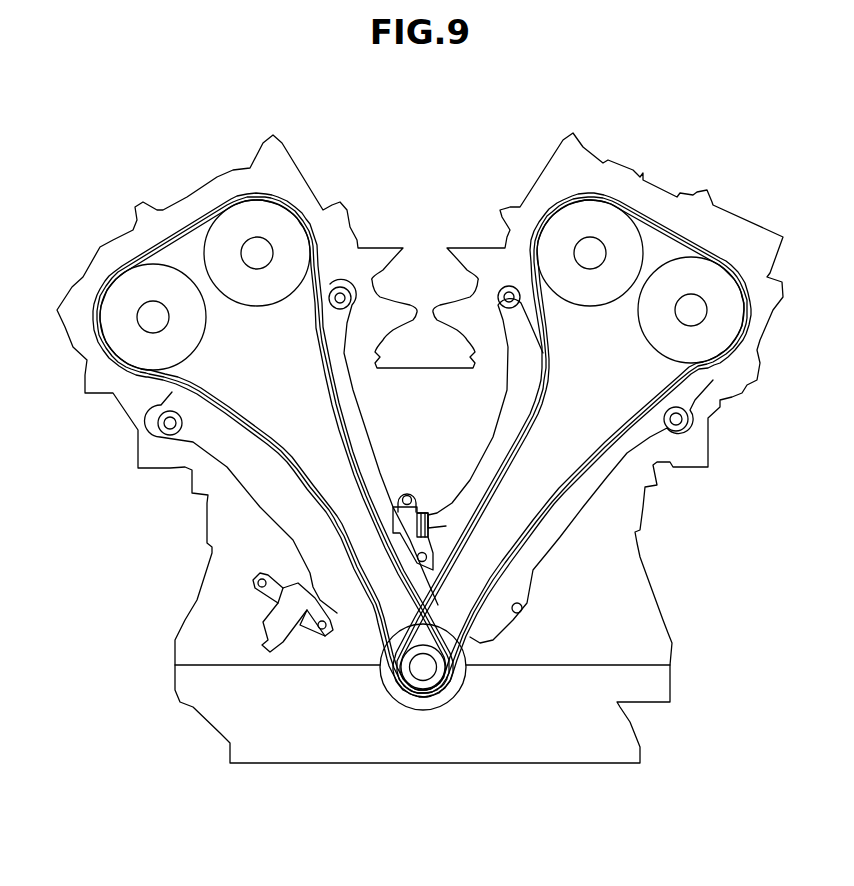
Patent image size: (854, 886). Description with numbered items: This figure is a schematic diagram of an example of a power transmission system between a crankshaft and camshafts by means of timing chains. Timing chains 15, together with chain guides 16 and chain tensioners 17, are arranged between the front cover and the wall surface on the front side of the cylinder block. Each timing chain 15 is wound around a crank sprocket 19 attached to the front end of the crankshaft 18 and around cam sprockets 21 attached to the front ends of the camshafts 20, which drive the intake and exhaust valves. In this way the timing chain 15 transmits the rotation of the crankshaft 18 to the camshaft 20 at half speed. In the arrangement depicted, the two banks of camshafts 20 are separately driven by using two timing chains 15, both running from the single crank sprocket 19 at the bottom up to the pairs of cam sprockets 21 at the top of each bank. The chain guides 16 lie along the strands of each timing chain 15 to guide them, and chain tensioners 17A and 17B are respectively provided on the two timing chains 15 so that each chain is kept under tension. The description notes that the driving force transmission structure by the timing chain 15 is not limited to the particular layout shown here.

The timing chain 15 is at (183, 225).
The chain guide 16 is at (350, 420).
The chain tensioner 17 is at (491, 662).
The chain tensioner 17A is at (293, 617).
The chain tensioner 17B is at (410, 525).
The crankshaft 18 is at (422, 668).
The crank sprocket 19 is at (400, 695).
The camshaft 20 is at (253, 253).
The cam sprocket 21 is at (258, 215).